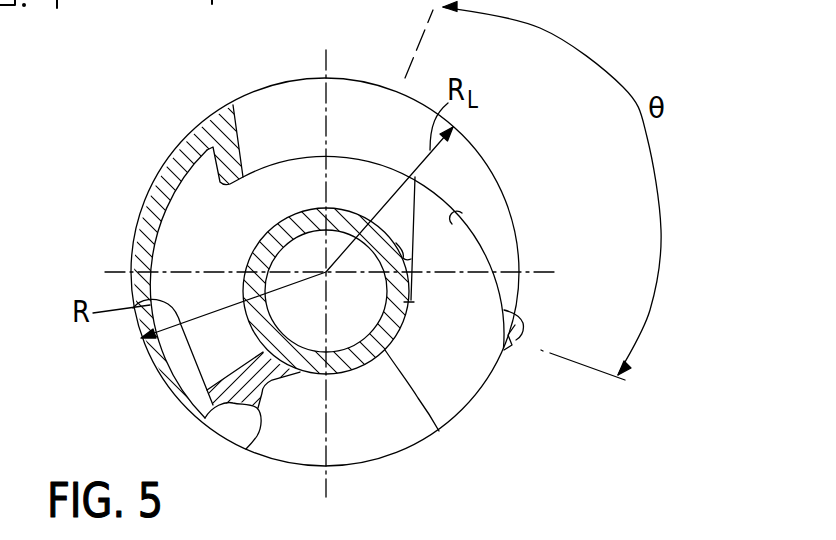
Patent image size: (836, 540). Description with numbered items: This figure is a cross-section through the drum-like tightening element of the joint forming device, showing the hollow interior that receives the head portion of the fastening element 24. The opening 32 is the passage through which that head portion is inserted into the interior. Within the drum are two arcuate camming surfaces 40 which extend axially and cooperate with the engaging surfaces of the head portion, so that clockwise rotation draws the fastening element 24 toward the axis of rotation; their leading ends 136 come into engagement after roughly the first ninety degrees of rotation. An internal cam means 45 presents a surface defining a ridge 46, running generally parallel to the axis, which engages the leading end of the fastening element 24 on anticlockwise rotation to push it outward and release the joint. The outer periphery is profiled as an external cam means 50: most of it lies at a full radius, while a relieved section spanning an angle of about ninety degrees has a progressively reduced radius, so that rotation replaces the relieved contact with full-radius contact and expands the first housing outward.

The fastening element 24 is at (130, 209).
The opening 32 is at (370, 430).
The arcuate camming surfaces 40 is at (465, 222).
The internal cam means 45 is at (439, 431).
The ridge 46 is at (240, 438).
The external cam means 50 is at (518, 243).
The leading ends of the camming surfaces 136 is at (516, 340).